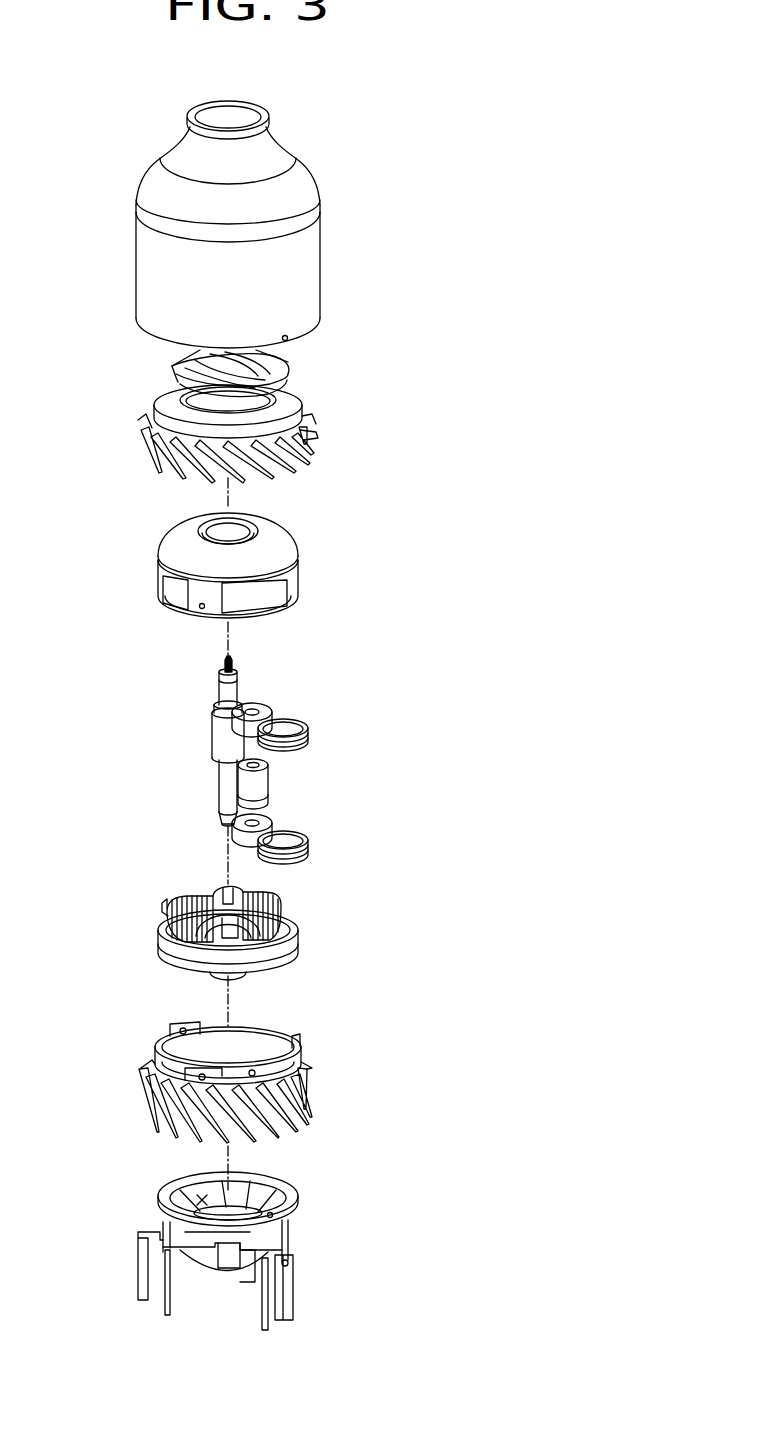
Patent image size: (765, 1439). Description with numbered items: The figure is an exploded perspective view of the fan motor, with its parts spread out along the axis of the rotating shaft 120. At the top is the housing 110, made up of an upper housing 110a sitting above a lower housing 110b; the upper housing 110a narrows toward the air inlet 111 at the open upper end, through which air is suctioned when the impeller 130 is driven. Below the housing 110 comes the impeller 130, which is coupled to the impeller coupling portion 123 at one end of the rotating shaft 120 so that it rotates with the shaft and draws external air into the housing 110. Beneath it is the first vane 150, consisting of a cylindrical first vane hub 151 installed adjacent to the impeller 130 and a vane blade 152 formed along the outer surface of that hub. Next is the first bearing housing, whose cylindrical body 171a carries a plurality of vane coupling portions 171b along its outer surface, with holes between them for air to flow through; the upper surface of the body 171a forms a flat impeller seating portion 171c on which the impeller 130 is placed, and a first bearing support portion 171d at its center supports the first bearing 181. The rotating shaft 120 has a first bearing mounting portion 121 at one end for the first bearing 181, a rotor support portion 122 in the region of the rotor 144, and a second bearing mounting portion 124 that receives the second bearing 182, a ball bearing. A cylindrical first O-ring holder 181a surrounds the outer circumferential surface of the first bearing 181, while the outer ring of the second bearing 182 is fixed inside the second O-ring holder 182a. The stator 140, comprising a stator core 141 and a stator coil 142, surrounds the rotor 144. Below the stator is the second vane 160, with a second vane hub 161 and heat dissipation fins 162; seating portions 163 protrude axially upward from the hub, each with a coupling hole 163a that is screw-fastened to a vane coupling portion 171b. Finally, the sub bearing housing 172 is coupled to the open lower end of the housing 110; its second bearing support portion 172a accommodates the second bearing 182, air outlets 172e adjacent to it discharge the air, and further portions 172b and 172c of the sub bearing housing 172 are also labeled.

The housing 110 is at (292, 211).
The upper housing 110a is at (287, 182).
The lower housing 110b is at (270, 276).
The air inlet 111 is at (255, 117).
The impeller 130 is at (288, 368).
The first vane 150 is at (282, 434).
The first vane hub 151 is at (302, 413).
The vane blade 152 is at (300, 452).
The body 171a is at (170, 547).
The vane coupling portion 171b is at (194, 603).
The impeller seating portion 171c is at (190, 528).
The first bearing support portion 171d is at (258, 527).
The rotating shaft 120 is at (218, 738).
The first bearing mounting portion 121 is at (222, 693).
The rotor support portion 122 is at (223, 783).
The impeller coupling portion 123 is at (223, 663).
The second bearing mounting portion 124 is at (220, 823).
The first bearing 181 is at (265, 704).
The first O-ring holder 181a is at (308, 725).
The rotor 144 is at (264, 776).
The second bearing 182 is at (268, 820).
The second O-ring holder 182a is at (308, 842).
The stator 140 is at (234, 931).
The stator core 141 is at (158, 942).
The stator coil 142 is at (303, 942).
The second vane 160 is at (242, 1064).
The second vane hub 161 is at (284, 1078).
The heat dissipation fin 162 is at (303, 1103).
The seating portion 163 is at (193, 1025).
The coupling hole 163a is at (170, 1034).
The sub bearing housing 172 is at (217, 1253).
The second bearing support portion 172a is at (240, 1207).
The outer leg 172b is at (138, 1267).
The inner leg 172c is at (173, 1280).
The air outlet 172e is at (203, 1198).